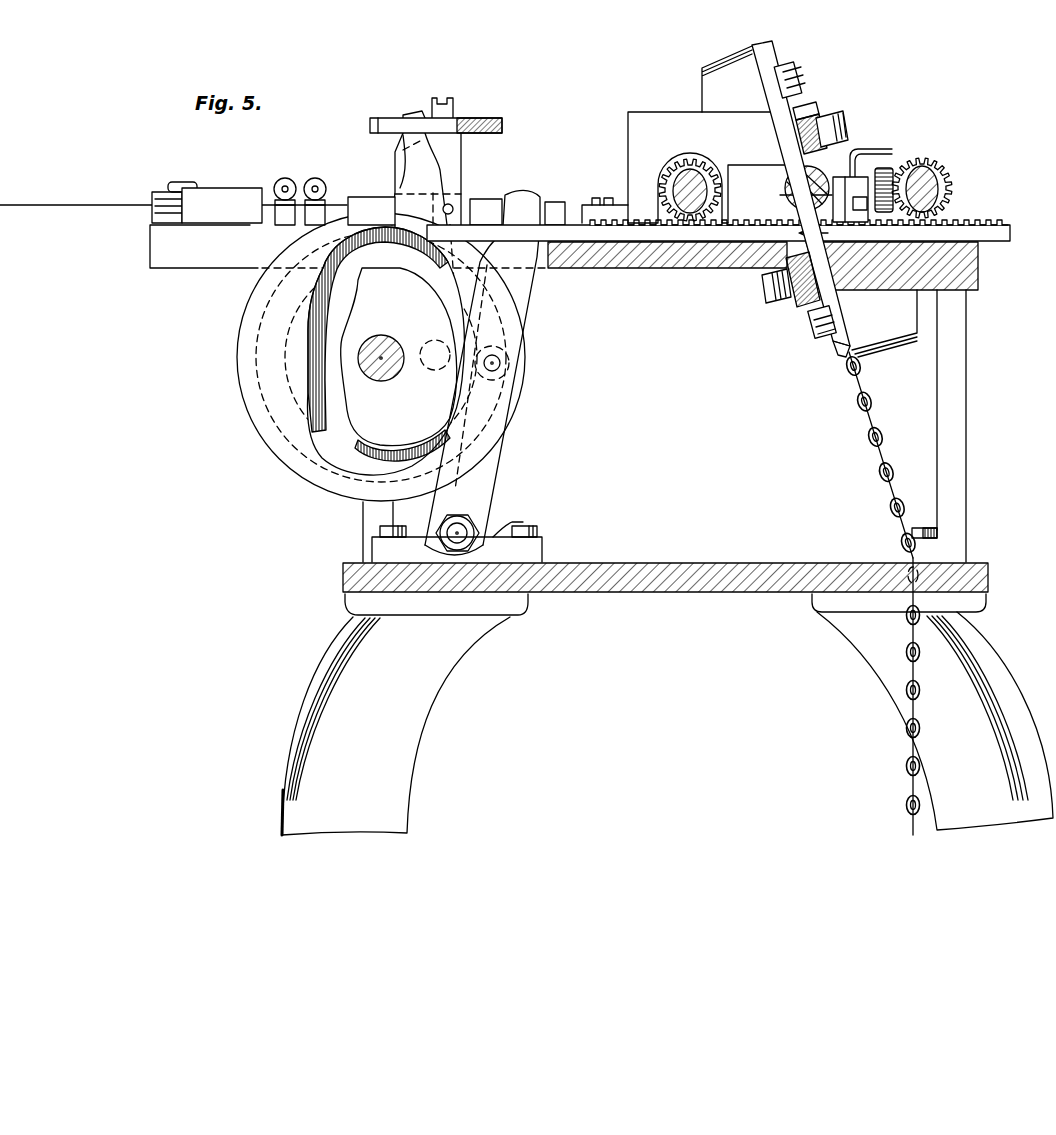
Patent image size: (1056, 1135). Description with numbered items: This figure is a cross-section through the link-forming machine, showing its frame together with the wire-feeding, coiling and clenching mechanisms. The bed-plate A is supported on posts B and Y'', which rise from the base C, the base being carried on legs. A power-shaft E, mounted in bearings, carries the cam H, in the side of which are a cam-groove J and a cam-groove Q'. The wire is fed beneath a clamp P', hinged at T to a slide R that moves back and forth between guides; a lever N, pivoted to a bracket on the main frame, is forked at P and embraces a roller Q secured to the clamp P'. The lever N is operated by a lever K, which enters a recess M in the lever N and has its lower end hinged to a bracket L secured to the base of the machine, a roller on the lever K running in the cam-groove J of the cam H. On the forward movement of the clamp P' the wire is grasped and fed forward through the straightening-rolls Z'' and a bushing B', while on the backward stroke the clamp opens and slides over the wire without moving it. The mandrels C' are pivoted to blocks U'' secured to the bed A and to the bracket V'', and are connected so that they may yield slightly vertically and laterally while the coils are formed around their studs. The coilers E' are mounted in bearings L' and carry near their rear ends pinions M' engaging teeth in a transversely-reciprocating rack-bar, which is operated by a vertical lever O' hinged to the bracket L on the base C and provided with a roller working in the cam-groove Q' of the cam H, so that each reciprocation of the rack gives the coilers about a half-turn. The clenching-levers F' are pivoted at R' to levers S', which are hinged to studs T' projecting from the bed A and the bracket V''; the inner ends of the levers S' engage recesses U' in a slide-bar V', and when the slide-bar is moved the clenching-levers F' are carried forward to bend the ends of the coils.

The straightening-rolls Z'' is at (239, 188).
The slide R is at (369, 192).
The recess M is at (416, 149).
The roller Q is at (434, 84).
The fork P is at (467, 88).
The lever N is at (497, 119).
The clamp P' is at (482, 145).
The lever K is at (428, 183).
The hinge T is at (473, 194).
The bracket V'' is at (686, 134).
The gear hub E' is at (820, 167).
The pinions M' is at (823, 172).
The bushing B' is at (771, 137).
The studs T' is at (810, 197).
The levers S' is at (834, 199).
The clenching-levers F' is at (813, 208).
The pivot R' is at (811, 191).
The recesses U' is at (829, 152).
The bearings L' is at (890, 159).
The mandrels C' is at (865, 173).
The blocks U'' is at (851, 210).
The slide-bar V' is at (775, 210).
The vertical lever O' is at (501, 372).
The bed-plate A is at (673, 266).
The cam H is at (256, 396).
The power-shaft E is at (381, 375).
The cam-groove J is at (290, 432).
The cam-groove Q' is at (386, 351).
The post B is at (435, 532).
The bracket L is at (492, 515).
The base C is at (667, 679).
The post Y'' is at (954, 426).